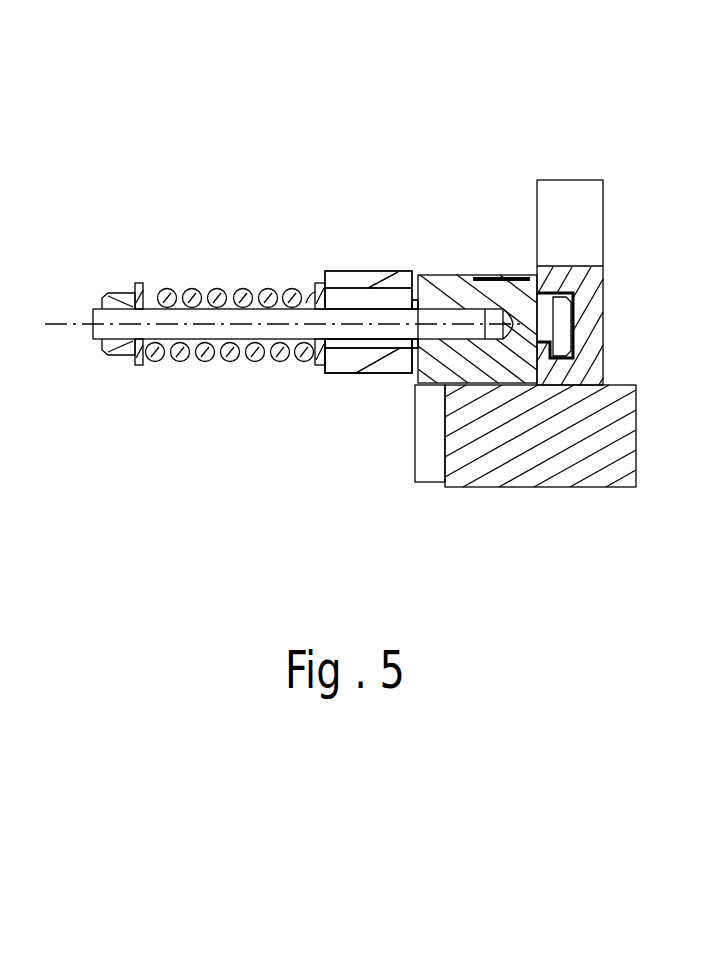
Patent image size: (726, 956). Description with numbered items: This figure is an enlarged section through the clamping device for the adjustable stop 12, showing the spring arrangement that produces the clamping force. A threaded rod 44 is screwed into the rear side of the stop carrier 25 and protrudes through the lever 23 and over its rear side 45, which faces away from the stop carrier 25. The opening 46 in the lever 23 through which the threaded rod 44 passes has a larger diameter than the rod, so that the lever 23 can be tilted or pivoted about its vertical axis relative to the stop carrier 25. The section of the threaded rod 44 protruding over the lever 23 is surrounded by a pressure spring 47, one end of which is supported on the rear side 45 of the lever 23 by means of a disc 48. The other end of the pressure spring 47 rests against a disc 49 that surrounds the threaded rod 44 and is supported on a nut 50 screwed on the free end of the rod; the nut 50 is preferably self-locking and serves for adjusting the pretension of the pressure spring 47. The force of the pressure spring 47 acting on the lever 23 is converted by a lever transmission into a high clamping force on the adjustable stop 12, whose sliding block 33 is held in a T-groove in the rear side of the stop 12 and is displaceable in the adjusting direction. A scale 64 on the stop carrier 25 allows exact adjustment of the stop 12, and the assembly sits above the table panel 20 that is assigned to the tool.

The adjustable stop 12 is at (592, 288).
The table panel 20 is at (602, 452).
The lever 23 is at (357, 278).
The stop carrier 25 is at (453, 290).
The sliding block 33 is at (553, 333).
The threaded rod 44 is at (185, 327).
The rear side of the lever 45 is at (325, 370).
The opening in the lever 46 is at (345, 350).
The pressure spring 47 is at (221, 292).
The disc 48 is at (324, 275).
The disc 49 is at (138, 286).
The nut 50 is at (113, 352).
The scale 64 is at (490, 275).